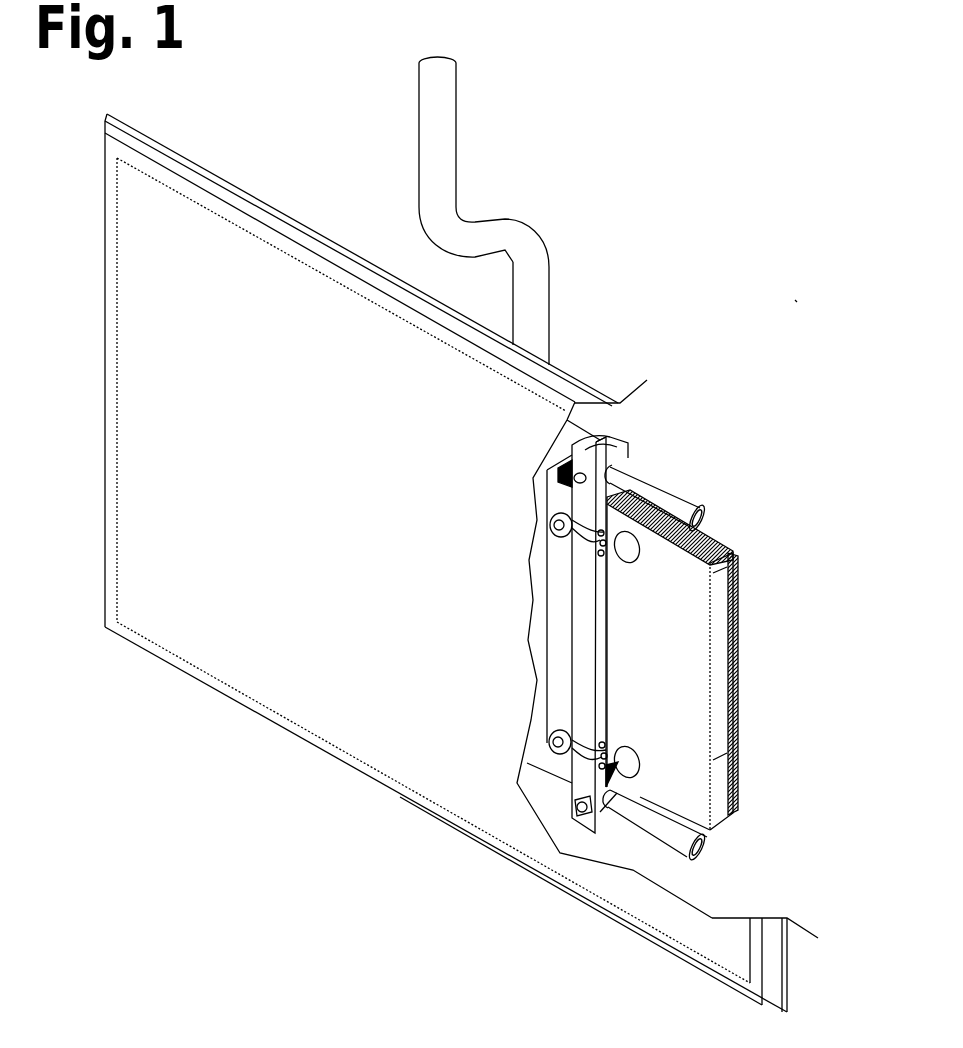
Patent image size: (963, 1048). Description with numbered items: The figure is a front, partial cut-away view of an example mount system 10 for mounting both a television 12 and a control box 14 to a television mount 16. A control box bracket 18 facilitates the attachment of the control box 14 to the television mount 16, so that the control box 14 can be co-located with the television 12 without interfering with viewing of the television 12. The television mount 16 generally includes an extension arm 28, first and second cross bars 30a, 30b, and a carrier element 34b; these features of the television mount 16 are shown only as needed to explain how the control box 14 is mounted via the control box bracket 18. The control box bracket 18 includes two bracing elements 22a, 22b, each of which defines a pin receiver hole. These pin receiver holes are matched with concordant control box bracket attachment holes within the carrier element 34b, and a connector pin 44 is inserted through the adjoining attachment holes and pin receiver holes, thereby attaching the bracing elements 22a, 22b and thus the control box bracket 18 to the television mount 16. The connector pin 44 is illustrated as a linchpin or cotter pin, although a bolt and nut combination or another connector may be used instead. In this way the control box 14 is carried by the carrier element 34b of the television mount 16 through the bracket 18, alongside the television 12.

The mount system 10 is at (801, 293).
The television 12 is at (138, 308).
The control box 14 is at (723, 722).
The television mount 16 is at (554, 303).
The control box bracket 18 is at (725, 538).
The bracing element 22a is at (617, 562).
The bracing element 22b is at (613, 746).
The extension arm 28 is at (418, 119).
The first cross bar 30a is at (673, 487).
The second cross bar 30b is at (700, 854).
The carrier element 34b is at (603, 666).
The connector pin 44 is at (538, 749).